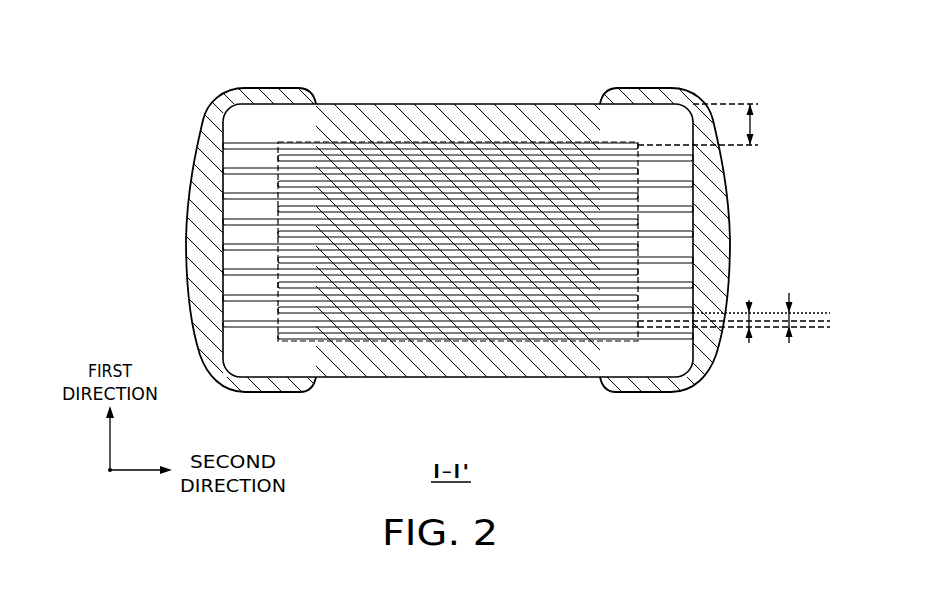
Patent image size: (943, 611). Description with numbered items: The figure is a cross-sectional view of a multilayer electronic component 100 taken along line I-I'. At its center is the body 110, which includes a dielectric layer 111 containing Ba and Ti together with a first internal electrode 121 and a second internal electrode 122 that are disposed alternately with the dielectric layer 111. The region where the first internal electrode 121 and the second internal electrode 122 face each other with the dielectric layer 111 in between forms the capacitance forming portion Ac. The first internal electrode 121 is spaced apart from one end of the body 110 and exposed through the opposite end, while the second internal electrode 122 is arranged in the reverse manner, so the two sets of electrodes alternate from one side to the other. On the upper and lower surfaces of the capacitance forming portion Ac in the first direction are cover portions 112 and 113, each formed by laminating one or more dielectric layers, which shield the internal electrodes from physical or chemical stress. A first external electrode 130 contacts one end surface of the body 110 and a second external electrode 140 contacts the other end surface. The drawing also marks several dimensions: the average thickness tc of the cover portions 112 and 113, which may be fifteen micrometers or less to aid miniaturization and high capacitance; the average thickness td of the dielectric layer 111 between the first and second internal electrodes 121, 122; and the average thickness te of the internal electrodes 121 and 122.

The multilayer electronic component 100 is at (238, 41).
The body 110 is at (393, 104).
The dielectric layer 111 is at (325, 188).
The cover portion 112 is at (455, 120).
The cover portion 113 is at (473, 360).
The first internal electrode 121 is at (508, 143).
The second internal electrode 122 is at (568, 157).
The first external electrode 130 is at (208, 165).
The second external electrode 140 is at (717, 251).
The capacitance forming portion Ac is at (558, 342).
The average thickness of the cover portions tc is at (708, 124).
The average thickness of the dielectric layer td is at (802, 318).
The average thickness of the internal electrodes te is at (734, 324).